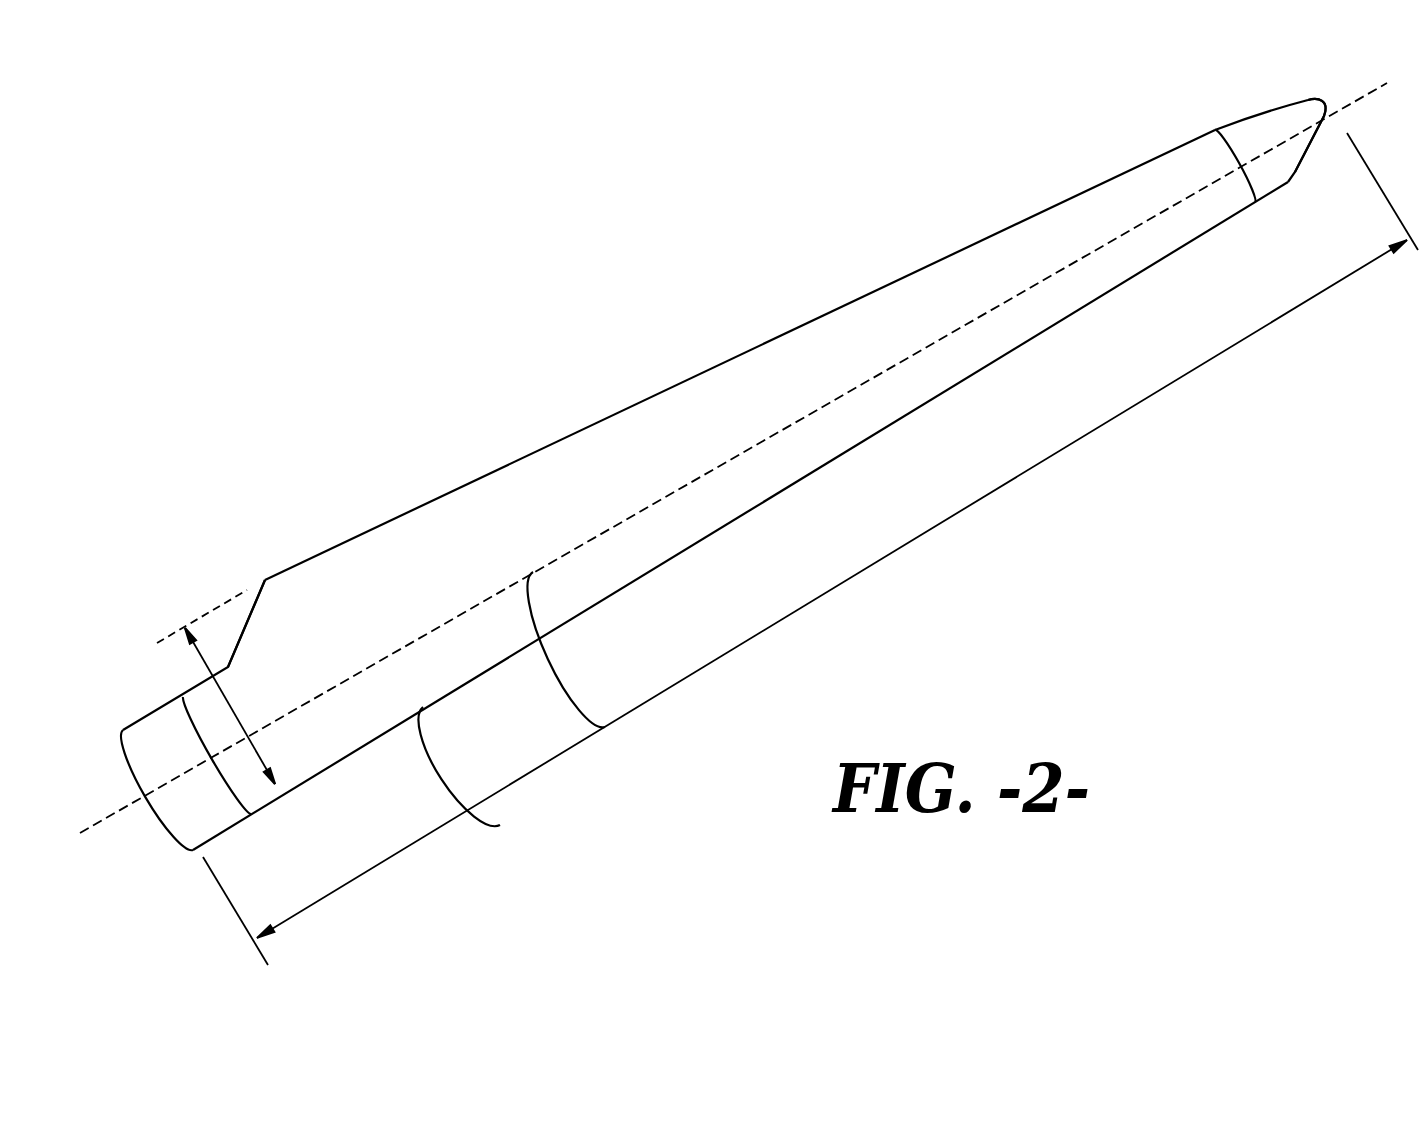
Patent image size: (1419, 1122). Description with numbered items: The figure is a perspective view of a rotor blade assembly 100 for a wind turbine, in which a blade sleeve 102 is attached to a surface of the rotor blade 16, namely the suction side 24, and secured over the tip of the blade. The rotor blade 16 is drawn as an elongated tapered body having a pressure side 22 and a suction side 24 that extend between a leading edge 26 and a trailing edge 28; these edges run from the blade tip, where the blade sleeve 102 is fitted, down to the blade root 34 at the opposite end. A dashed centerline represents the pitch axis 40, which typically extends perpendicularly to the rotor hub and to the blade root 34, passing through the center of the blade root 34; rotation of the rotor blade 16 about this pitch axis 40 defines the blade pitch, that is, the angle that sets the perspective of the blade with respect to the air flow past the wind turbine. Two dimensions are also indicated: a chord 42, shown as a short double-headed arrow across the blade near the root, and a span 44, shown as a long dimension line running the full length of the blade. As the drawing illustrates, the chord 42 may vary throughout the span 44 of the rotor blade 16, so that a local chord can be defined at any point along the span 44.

The rotor blade 16 is at (417, 487).
The pressure side 22 is at (682, 427).
The suction side 24 is at (355, 572).
The leading edge 26 is at (483, 776).
The trailing edge 28 is at (285, 568).
The blade root 34 is at (207, 795).
The pitch axis 40 is at (605, 727).
The chord 42 is at (193, 710).
The span 44 is at (840, 583).
The rotor blade assembly 100 is at (733, 458).
The blade sleeve 102 is at (1290, 117).